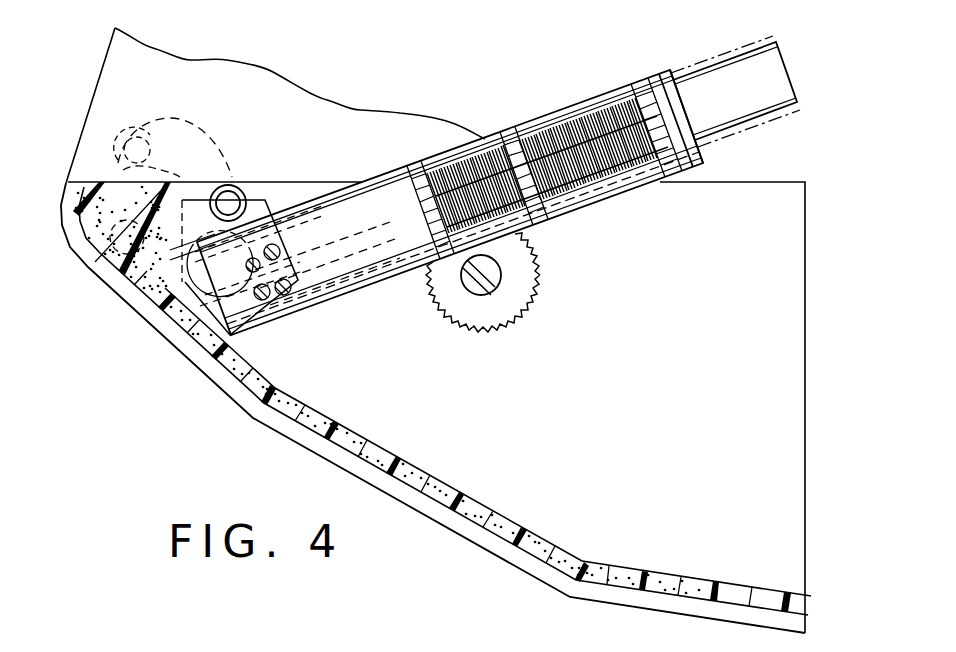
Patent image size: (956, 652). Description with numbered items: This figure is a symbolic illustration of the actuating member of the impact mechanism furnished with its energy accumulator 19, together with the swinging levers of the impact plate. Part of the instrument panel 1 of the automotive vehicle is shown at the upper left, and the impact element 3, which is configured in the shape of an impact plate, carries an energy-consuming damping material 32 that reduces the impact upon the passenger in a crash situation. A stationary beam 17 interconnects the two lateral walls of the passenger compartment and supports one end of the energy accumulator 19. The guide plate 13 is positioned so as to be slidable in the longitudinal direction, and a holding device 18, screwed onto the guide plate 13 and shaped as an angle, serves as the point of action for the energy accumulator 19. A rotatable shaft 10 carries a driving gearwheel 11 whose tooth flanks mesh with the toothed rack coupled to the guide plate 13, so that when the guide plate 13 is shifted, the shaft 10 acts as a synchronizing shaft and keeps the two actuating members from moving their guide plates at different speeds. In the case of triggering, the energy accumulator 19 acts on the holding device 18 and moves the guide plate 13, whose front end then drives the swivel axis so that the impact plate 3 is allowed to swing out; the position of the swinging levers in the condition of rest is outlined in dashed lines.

The instrument panel 1 is at (106, 90).
The impact element 3 is at (433, 483).
The energy-consuming damping material 32 is at (288, 428).
The holding device 18 is at (282, 225).
The energy accumulator 19 is at (571, 106).
The beam 17 is at (683, 167).
The guide plate 13 is at (753, 102).
The shaft 10 is at (500, 276).
The driving gearwheel 11 is at (514, 308).